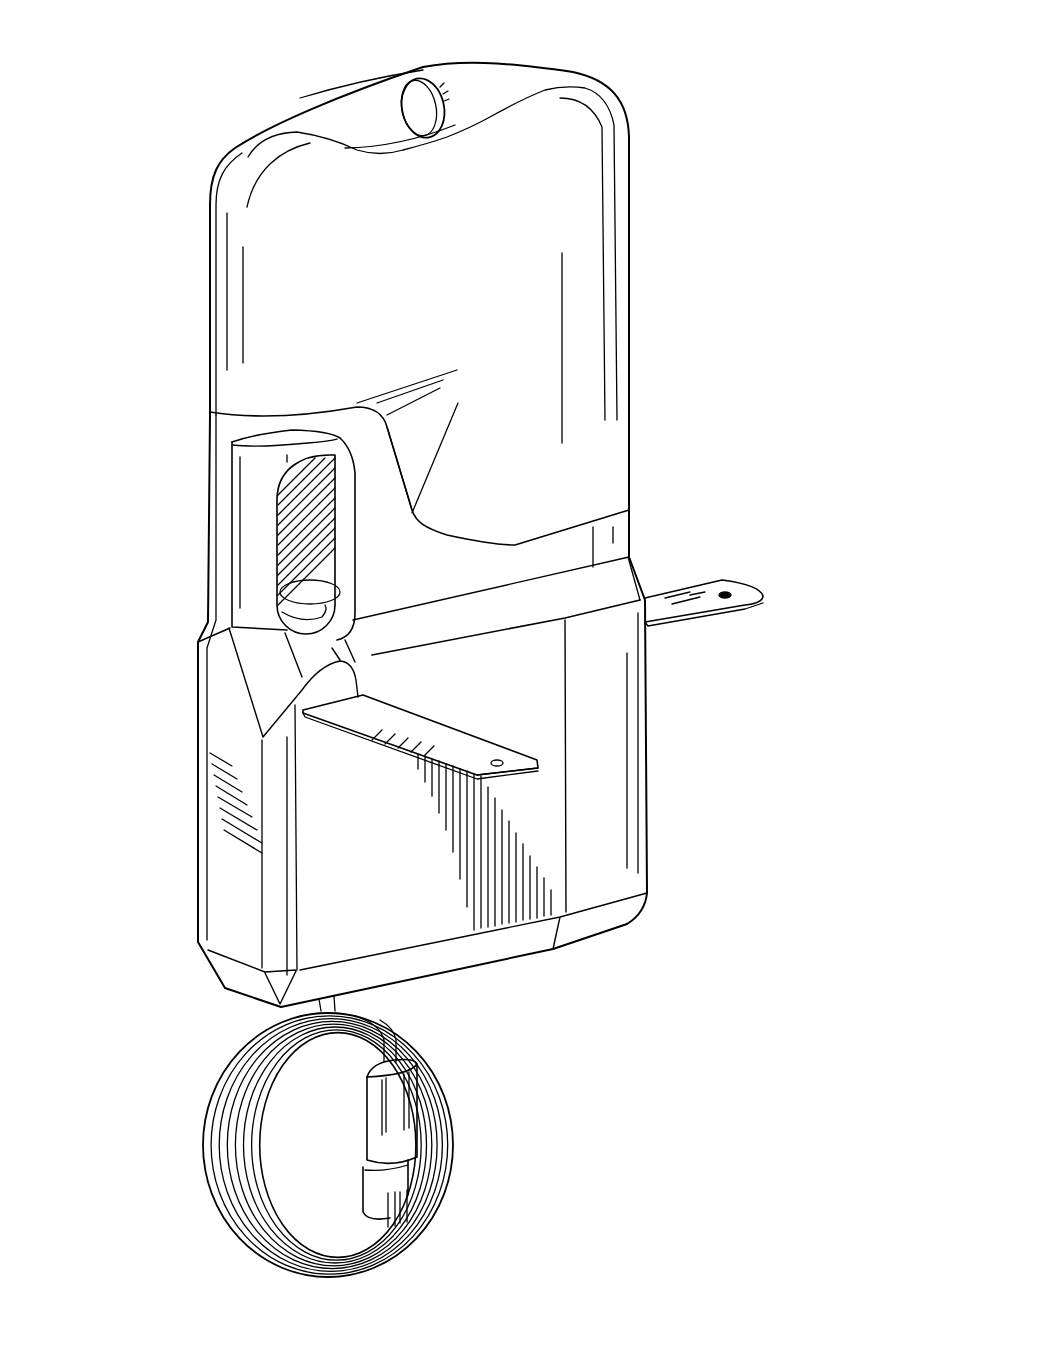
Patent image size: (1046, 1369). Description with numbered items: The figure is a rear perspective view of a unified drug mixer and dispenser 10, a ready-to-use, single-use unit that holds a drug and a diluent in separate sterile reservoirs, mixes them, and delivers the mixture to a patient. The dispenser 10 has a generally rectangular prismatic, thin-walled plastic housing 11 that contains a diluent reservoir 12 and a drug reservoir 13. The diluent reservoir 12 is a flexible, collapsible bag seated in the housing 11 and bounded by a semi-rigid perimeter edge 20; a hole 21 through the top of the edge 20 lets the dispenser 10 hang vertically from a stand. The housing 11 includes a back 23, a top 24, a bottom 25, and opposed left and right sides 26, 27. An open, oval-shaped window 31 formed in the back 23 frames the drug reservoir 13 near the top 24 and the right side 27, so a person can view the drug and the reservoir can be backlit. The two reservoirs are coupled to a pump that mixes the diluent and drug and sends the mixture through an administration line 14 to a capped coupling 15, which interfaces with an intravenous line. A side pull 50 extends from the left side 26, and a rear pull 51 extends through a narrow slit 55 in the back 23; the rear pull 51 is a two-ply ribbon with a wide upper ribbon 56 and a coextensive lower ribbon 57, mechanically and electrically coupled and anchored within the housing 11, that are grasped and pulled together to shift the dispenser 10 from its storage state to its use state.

The unified drug mixer and dispenser 10 is at (762, 106).
The housing 11 is at (636, 812).
The diluent reservoir 12 is at (618, 318).
The drug reservoir 13 is at (282, 543).
The administration line 14 is at (212, 1112).
The capped coupling 15 is at (425, 1172).
The semi-rigid perimeter edge 20 is at (510, 88).
The hole 21 is at (423, 119).
The back 23 is at (560, 684).
The top 24 is at (457, 534).
The bottom 25 is at (490, 963).
The left side 26 is at (632, 562).
The right side 27 is at (202, 727).
The window 31 is at (312, 570).
The side pull 50 is at (748, 592).
The rear pull 51 is at (442, 737).
The slit 55 is at (353, 697).
The upper ribbon 56 is at (505, 748).
The lower ribbon 57 is at (523, 768).